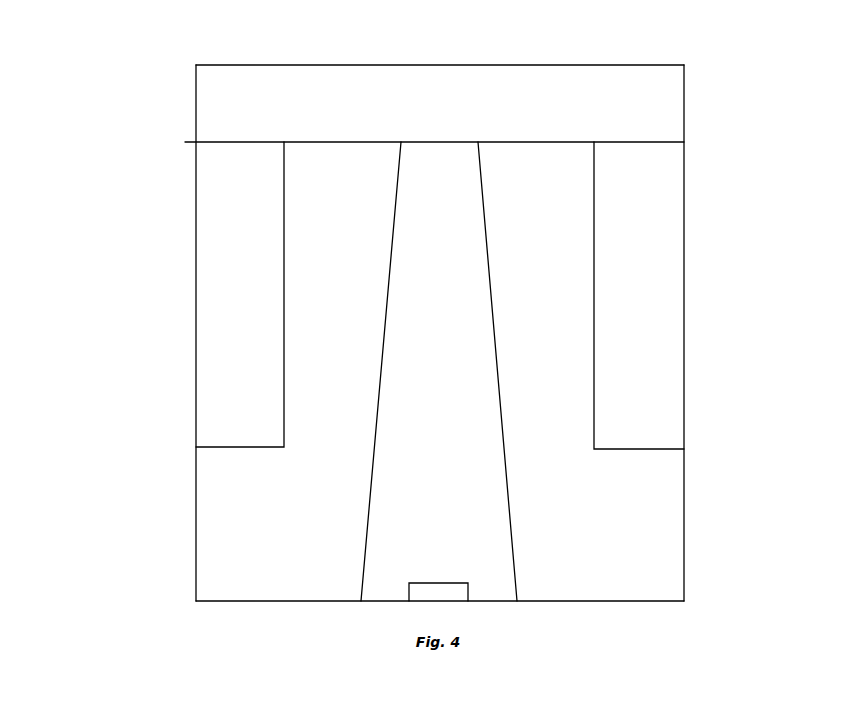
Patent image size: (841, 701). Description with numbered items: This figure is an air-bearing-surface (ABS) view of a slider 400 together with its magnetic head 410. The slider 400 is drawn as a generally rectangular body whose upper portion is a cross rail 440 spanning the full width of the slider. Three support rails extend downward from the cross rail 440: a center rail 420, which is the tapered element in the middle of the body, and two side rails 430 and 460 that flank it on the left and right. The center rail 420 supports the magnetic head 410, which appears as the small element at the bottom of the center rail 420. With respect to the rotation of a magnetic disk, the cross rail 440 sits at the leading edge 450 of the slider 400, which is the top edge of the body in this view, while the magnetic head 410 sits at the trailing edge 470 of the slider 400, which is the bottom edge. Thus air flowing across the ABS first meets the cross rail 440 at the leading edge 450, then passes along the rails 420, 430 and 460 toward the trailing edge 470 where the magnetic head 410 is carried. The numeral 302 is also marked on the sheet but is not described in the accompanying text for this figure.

The substrate 302 is at (442, 300).
The slider 400 is at (65, 555).
The magnetic head 410 is at (428, 592).
The center rail 420 is at (410, 438).
The side rail 430 is at (233, 265).
The cross rail 440 is at (235, 94).
The leading edge 450 is at (262, 64).
The side rail 460 is at (663, 287).
The trailing edge 470 is at (595, 603).